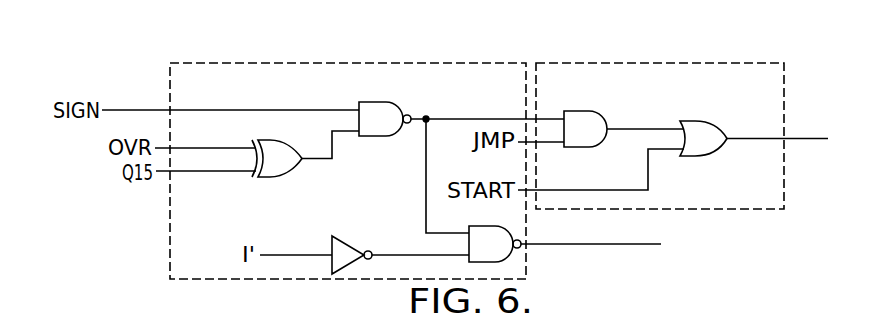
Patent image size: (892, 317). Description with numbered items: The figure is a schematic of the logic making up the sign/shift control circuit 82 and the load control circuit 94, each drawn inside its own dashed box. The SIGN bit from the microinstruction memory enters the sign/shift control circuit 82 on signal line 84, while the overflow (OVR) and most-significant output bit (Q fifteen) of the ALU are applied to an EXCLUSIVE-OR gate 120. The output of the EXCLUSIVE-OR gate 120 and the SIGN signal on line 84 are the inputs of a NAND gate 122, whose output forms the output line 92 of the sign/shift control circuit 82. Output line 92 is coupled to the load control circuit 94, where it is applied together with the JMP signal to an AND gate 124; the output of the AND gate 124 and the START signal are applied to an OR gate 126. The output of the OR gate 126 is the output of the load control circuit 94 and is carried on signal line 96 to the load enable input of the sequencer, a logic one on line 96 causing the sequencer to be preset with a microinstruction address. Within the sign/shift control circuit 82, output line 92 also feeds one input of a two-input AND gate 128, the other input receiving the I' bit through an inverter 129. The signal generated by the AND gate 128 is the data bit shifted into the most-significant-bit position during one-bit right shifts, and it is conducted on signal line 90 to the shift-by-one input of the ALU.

The sign/shift control circuit 82 is at (478, 63).
The signal line 84 is at (122, 110).
The signal line 90 is at (588, 244).
The output line 92 is at (462, 119).
The load control circuit 94 is at (784, 97).
The signal line 96 is at (790, 138).
The EXCLUSIVE-OR gate 120 is at (277, 141).
The NAND gate 122 is at (387, 102).
The AND gate 124 is at (588, 111).
The OR gate 126 is at (712, 127).
The AND gate 128 is at (480, 226).
The inverter 129 is at (340, 238).